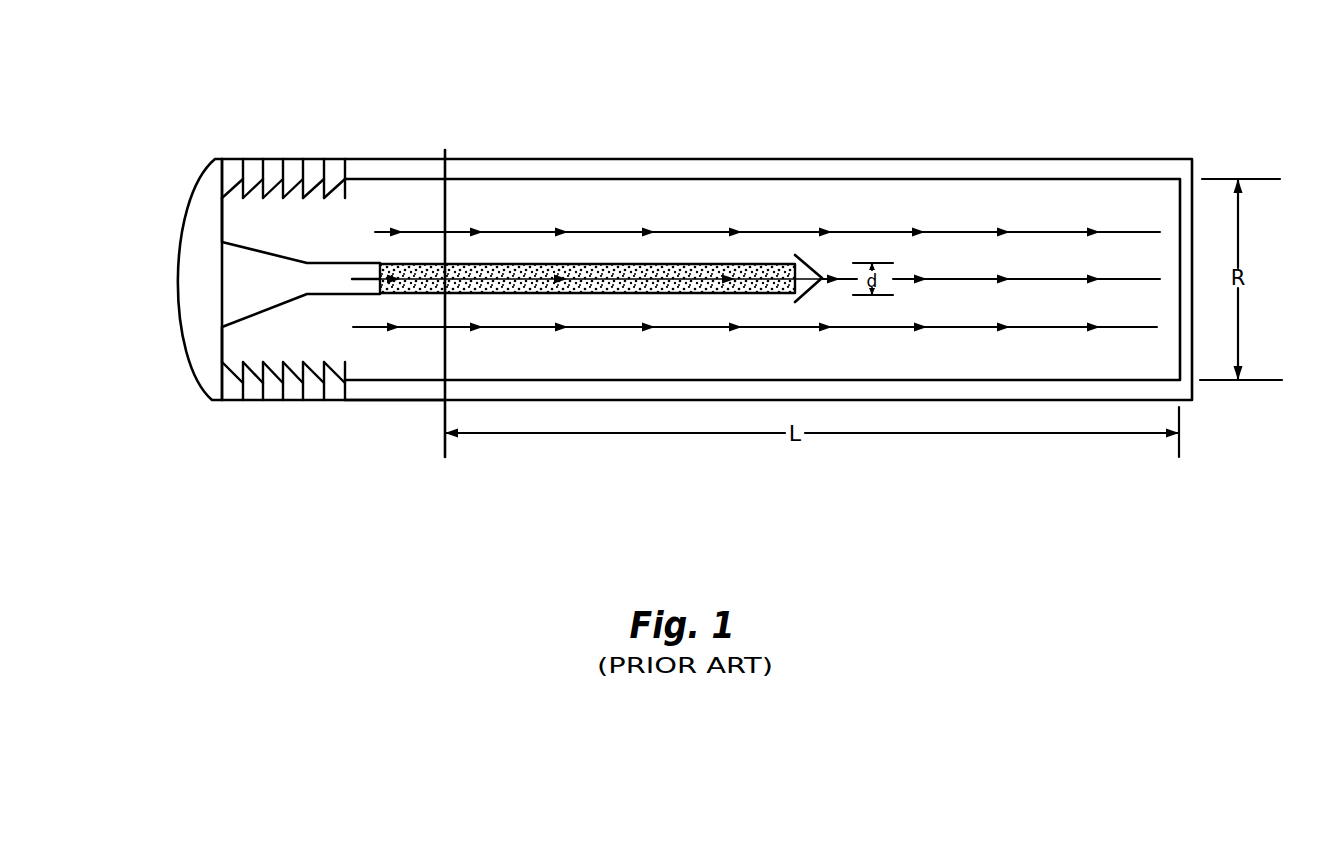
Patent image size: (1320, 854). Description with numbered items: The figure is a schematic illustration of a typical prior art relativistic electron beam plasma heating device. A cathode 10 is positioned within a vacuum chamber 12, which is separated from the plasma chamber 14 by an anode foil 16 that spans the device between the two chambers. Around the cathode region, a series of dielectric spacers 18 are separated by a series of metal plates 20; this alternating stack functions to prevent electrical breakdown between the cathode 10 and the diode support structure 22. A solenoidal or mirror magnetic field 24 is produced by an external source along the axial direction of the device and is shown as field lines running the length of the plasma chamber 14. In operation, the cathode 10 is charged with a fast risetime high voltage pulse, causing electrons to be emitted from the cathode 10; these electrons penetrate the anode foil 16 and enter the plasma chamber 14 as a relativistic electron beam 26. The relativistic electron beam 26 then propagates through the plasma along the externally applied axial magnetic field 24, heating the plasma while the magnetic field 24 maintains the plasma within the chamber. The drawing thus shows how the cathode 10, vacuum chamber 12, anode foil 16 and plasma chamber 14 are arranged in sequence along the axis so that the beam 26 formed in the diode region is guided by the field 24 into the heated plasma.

The cathode 10 is at (228, 265).
The vacuum chamber 12 is at (249, 226).
The plasma chamber 14 is at (992, 198).
The anode foil 16 is at (441, 157).
The dielectric spacers 18 is at (233, 393).
The metal plates 20 is at (298, 159).
The diode support structure 22 is at (435, 392).
The magnetic field 24 is at (706, 230).
The relativistic electron beam 26 is at (535, 265).